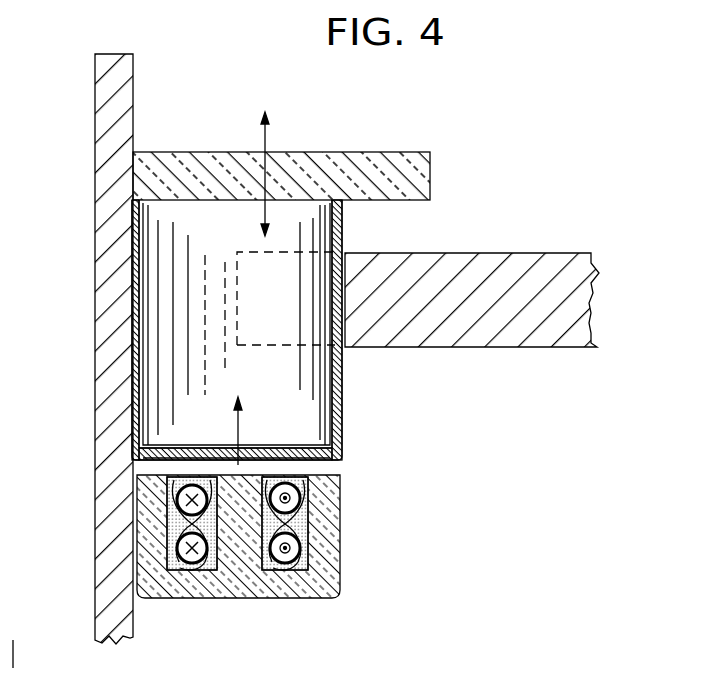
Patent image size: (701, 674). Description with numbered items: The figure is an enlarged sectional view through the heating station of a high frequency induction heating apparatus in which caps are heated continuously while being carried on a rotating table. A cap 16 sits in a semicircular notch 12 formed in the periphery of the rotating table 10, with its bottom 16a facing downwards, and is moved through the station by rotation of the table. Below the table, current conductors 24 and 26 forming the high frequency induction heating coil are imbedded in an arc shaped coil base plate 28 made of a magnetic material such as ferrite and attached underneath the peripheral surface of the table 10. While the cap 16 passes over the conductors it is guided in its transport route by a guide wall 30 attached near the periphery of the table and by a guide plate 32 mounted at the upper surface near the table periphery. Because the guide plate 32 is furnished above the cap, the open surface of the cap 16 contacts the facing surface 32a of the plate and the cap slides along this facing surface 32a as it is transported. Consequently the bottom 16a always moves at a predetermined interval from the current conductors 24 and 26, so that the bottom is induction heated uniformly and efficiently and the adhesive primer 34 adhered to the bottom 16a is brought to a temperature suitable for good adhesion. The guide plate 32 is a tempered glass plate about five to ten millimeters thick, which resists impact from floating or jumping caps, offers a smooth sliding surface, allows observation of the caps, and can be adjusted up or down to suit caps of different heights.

The rotating table 10 is at (496, 327).
The semicircular notch 12 is at (345, 330).
The cap 16 is at (347, 397).
The cap bottom 16a is at (278, 460).
The current conductor 24 is at (170, 478).
The current conductor 26 is at (282, 478).
The coil base plate 28 is at (250, 584).
The guide wall 30 is at (96, 152).
The guide plate 32 is at (372, 166).
The facing surface 32a is at (210, 199).
The adhesive primer 34 is at (216, 448).